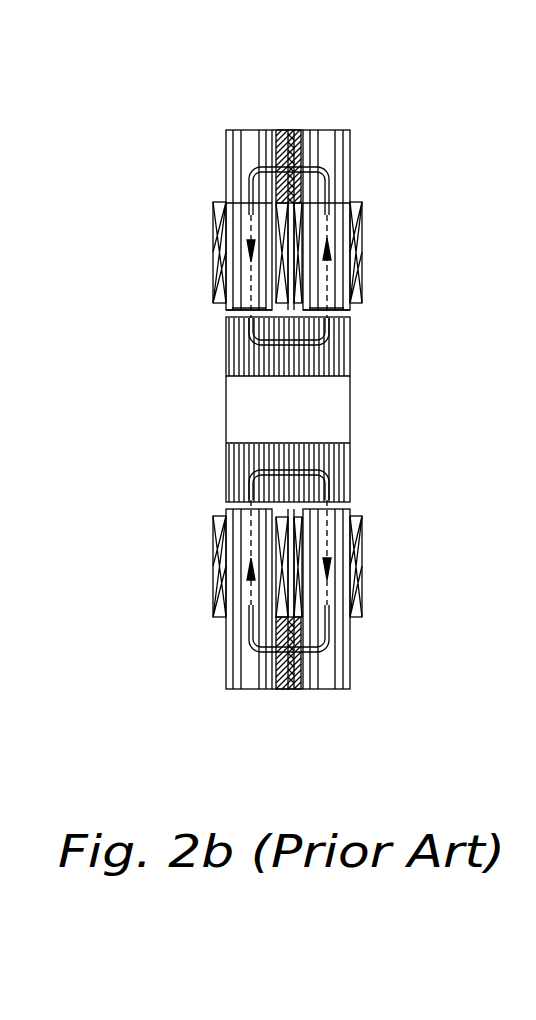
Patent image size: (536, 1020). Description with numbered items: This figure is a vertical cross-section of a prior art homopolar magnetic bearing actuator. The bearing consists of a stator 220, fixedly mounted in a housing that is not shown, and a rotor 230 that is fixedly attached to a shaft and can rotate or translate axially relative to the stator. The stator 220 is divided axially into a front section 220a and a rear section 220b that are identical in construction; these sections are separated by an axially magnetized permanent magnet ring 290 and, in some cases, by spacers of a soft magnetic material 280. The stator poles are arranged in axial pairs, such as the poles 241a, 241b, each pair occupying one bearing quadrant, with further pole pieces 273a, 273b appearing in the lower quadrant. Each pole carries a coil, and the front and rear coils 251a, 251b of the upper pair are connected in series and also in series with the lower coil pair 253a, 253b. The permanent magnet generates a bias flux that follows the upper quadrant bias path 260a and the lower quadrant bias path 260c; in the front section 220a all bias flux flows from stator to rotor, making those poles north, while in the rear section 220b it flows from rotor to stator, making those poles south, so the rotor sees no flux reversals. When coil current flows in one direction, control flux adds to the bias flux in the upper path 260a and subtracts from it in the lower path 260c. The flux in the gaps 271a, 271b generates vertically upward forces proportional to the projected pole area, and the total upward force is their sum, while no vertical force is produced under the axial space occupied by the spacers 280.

The stator 220 is at (268, 354).
The front section 220a is at (226, 158).
The rear section 220b is at (352, 160).
The rotor 230 is at (225, 355).
The pole 241a is at (232, 223).
The pole 241b is at (343, 225).
The coil 251a is at (217, 264).
The coil 251b is at (362, 262).
The coil 253a is at (215, 556).
The coil 253b is at (362, 556).
The upper quadrant bias path 260a is at (250, 195).
The lower quadrant bias path 260c is at (250, 626).
The gap 271a is at (240, 315).
The gap 271b is at (340, 315).
The left lower pole 273a is at (240, 506).
The right lower pole 273b is at (340, 506).
The spacers of a soft magnetic material 280 is at (300, 132).
The axially magnetized permanent magnet ring 290 is at (289, 130).